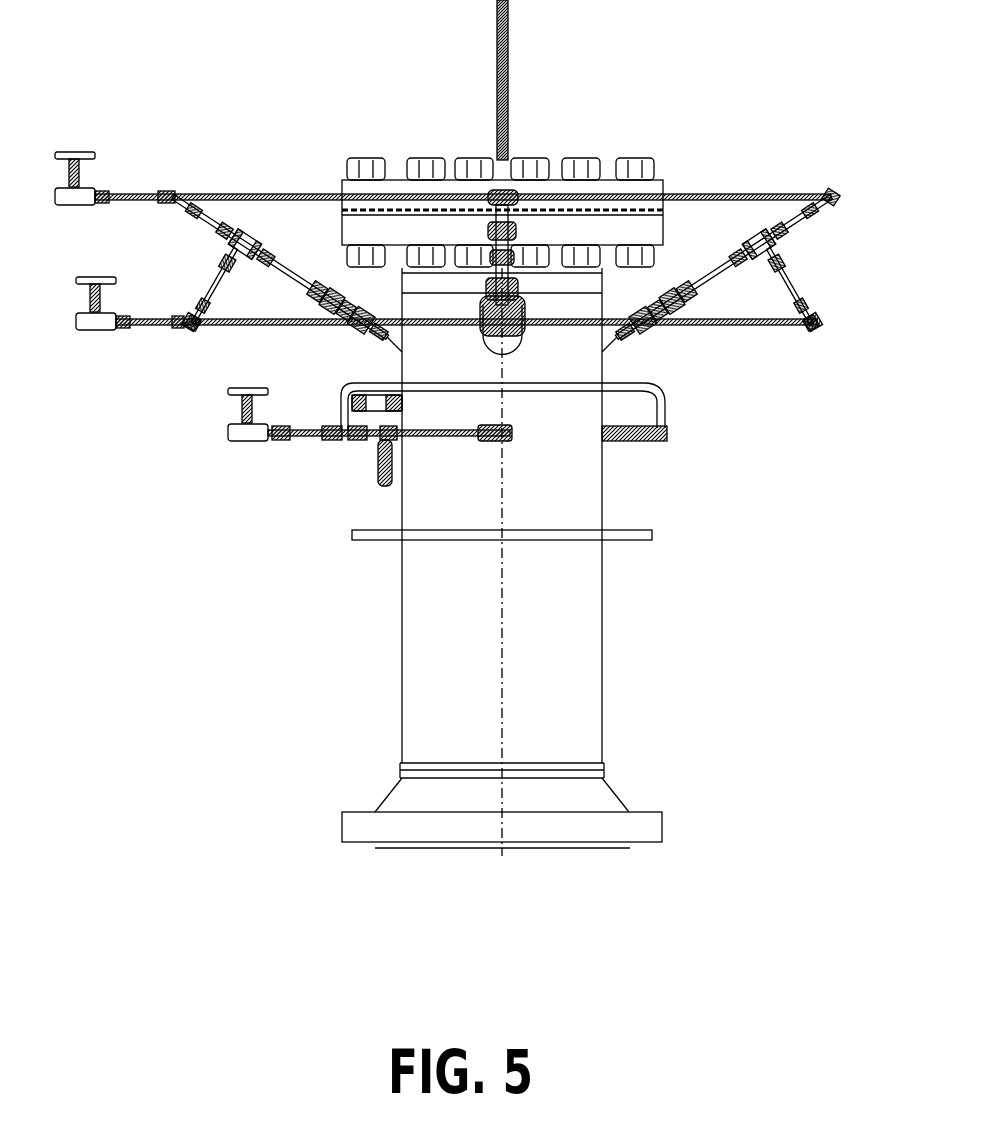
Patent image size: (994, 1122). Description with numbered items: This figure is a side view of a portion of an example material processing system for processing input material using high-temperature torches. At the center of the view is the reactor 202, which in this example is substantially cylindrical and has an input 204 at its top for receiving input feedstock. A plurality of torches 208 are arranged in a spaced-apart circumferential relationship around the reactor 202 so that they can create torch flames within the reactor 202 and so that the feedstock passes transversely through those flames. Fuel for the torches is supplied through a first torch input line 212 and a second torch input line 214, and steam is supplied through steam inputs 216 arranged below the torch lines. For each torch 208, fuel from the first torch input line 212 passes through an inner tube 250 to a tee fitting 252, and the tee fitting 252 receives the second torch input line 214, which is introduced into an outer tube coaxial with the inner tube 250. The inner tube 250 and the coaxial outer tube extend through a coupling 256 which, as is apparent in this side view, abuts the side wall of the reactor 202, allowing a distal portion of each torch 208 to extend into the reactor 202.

The reactor 202 is at (402, 567).
The input 204 is at (497, 24).
The torch 208 is at (322, 246).
The first torch input line 212 is at (252, 194).
The second torch input line 214 is at (226, 256).
The steam input 216 is at (340, 440).
The inner tube 250 is at (193, 210).
The tee fitting 252 is at (242, 243).
The coupling 256 is at (378, 342).